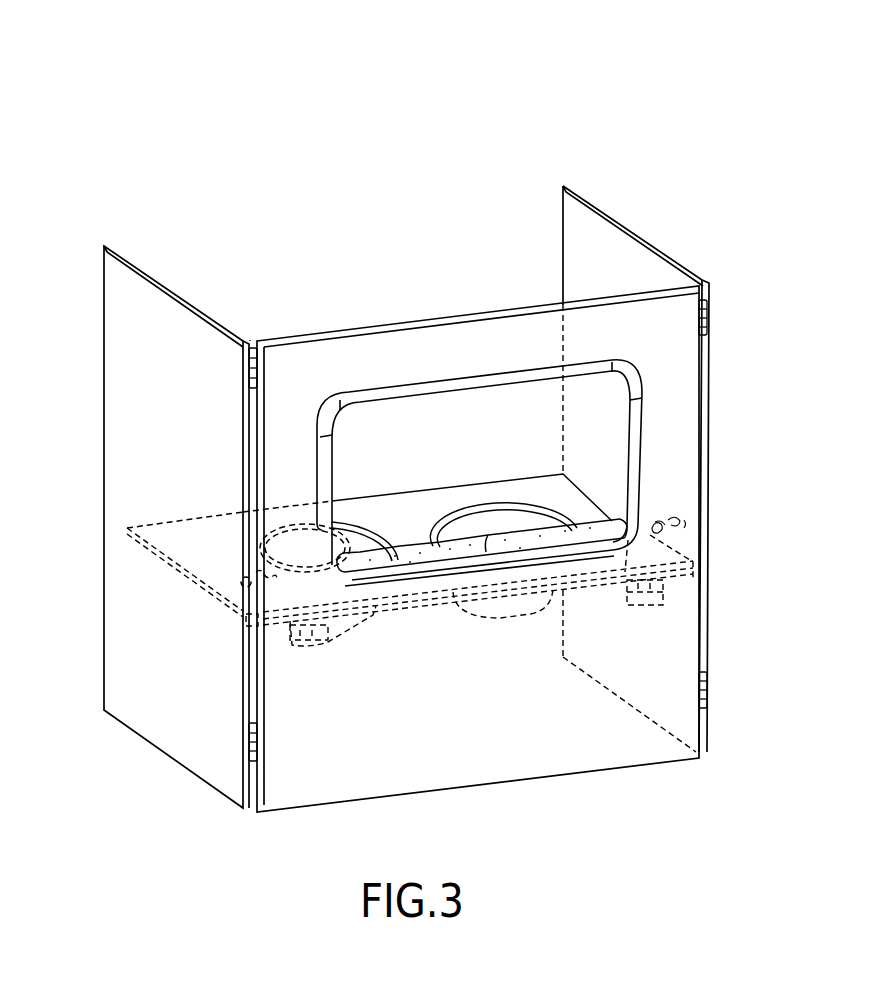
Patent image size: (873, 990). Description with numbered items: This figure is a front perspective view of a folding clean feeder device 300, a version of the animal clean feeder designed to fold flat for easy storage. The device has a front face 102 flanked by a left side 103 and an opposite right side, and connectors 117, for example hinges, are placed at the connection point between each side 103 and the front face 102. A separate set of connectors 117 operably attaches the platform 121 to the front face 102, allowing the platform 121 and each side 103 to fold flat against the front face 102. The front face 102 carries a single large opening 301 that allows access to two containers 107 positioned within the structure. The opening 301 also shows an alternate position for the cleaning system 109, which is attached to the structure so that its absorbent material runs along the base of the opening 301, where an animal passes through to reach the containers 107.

The folding clean feeder device 300 is at (545, 116).
The front face 102 is at (593, 742).
The left side 103 is at (215, 222).
The connectors 117 is at (249, 379).
The single large opening 301 is at (467, 360).
The platform 121 is at (413, 515).
The cleaning system 109 is at (601, 519).
The container 107 is at (497, 610).